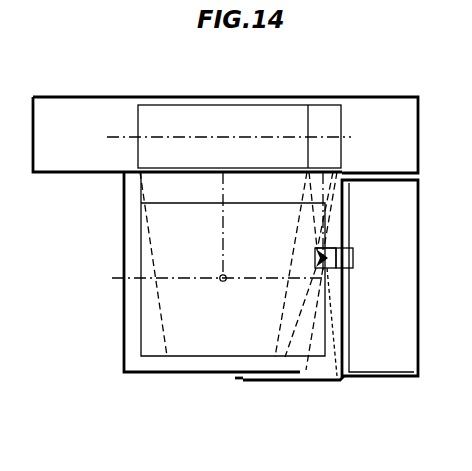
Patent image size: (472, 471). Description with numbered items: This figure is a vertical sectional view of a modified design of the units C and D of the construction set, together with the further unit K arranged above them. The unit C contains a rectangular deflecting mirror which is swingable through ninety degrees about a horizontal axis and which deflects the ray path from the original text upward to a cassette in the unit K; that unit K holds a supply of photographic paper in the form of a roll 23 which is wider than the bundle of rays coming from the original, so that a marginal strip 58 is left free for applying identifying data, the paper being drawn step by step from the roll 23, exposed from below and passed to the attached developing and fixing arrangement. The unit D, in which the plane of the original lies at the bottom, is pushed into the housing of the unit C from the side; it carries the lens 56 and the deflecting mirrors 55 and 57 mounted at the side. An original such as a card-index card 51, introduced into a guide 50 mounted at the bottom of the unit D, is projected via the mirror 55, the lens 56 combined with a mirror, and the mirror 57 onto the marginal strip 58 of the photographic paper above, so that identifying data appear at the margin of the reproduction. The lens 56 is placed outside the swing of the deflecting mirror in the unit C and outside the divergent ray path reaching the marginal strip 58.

The unit K is at (77, 90).
The roll 23 is at (238, 108).
The marginal strip 58 is at (324, 117).
The unit C is at (112, 258).
The unit D is at (424, 228).
The deflecting mirror 55 is at (326, 268).
The lens 56 is at (354, 257).
The deflecting mirror 57 is at (318, 249).
The guide 50 is at (279, 382).
The card-index card 51 is at (236, 380).